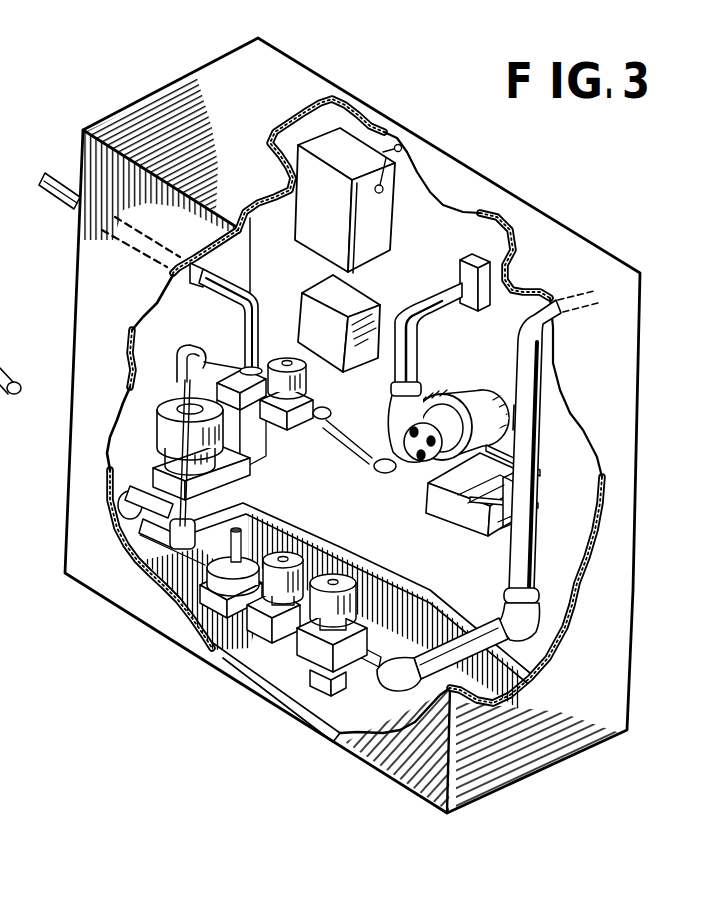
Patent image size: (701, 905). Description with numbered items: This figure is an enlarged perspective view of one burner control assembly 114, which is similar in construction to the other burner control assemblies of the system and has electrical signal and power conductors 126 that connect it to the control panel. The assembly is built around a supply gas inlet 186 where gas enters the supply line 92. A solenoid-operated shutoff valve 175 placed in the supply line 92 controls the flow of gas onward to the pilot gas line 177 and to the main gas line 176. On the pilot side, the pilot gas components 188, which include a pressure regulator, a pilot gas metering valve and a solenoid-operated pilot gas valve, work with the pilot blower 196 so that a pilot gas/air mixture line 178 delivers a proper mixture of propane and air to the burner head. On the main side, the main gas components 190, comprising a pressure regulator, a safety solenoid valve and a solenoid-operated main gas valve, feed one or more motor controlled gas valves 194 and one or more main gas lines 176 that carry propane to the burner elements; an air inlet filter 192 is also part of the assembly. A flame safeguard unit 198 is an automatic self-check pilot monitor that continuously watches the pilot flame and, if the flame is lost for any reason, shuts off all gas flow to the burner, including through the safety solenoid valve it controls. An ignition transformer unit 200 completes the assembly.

The supply line 92 is at (67, 203).
The burner control assembly 114 is at (565, 187).
The electrical signal and power conductors 126 is at (430, 136).
The solenoid-operated shutoff valve 175 is at (154, 460).
The main gas line 176 is at (522, 352).
The pilot gas line 177 is at (376, 472).
The pilot gas/air mixture line 178 is at (437, 300).
The supply gas inlet 186 is at (172, 272).
The pilot gas components 188 is at (230, 343).
The main gas components 190 is at (234, 626).
The air inlet filter 192 is at (393, 616).
The motor controlled gas valve 194 is at (539, 479).
The pilot blower 196 is at (520, 418).
The flame safeguard unit 198 is at (340, 341).
The ignition transformer unit 200 is at (350, 148).